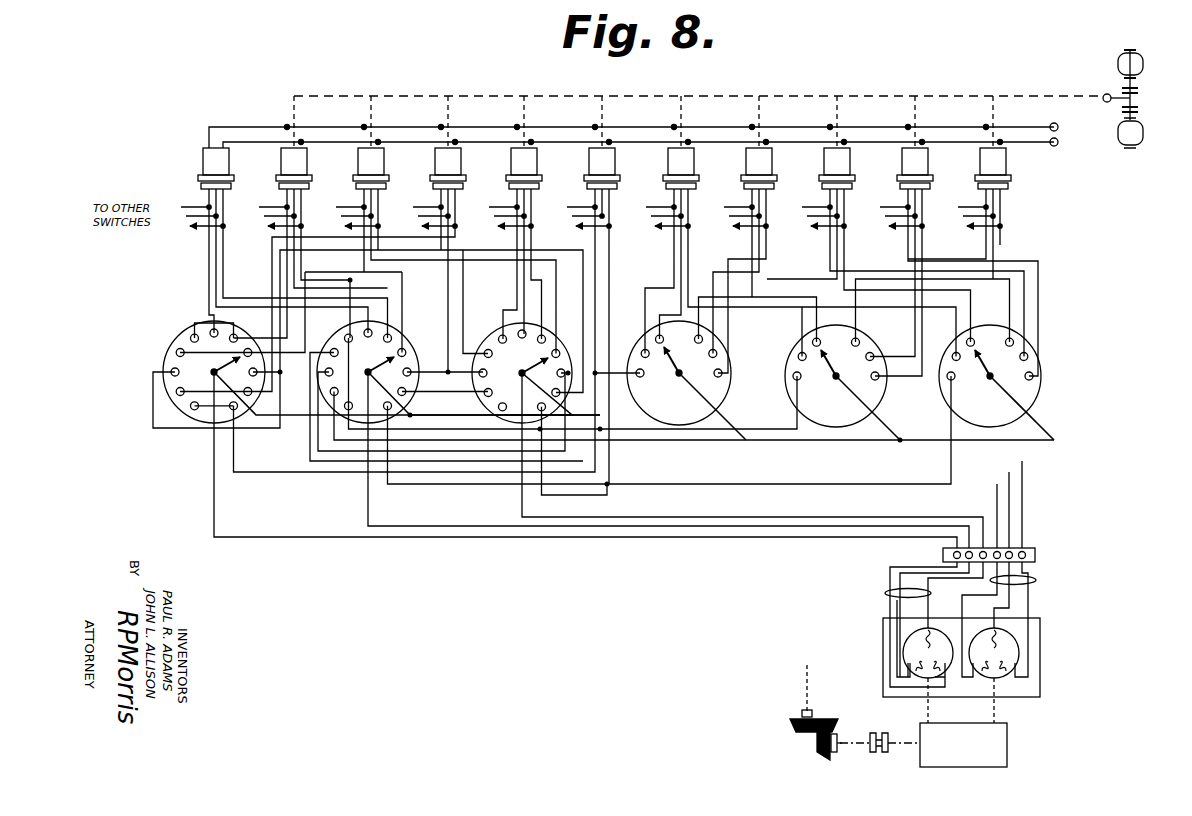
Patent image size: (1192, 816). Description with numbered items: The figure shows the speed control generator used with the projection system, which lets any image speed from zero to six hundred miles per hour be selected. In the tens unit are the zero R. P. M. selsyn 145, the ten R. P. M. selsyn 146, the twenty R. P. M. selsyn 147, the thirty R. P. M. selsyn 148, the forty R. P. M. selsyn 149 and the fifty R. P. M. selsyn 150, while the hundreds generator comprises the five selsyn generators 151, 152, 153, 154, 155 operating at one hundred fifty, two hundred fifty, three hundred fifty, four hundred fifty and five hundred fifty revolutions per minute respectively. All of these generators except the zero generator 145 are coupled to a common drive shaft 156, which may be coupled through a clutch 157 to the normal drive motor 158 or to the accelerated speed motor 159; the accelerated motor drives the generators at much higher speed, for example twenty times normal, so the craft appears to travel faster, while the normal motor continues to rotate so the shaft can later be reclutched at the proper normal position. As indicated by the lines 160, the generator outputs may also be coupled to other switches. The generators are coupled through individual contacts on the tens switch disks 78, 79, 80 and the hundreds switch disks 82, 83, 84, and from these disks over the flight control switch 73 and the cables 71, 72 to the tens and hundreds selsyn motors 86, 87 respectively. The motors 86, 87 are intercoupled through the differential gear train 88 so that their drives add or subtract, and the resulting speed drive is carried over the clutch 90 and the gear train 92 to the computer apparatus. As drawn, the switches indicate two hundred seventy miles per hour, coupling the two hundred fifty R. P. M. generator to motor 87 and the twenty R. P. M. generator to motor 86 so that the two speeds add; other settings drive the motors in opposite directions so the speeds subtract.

The cable 71 is at (885, 593).
The cable 72 is at (1036, 580).
The cam controlled switch 73 is at (943, 555).
The tens switch disk 78 is at (381, 372).
The tens switch disk 79 is at (458, 372).
The tens switch disk 80 is at (522, 373).
The hundreds switch disk 82 is at (686, 380).
The hundreds switch disk 83 is at (842, 382).
The hundreds switch disk 84 is at (996, 382).
The tens selsyn motor 86 is at (936, 640).
The hundreds selsyn motor 87 is at (1004, 640).
The differential gear train 88 is at (1007, 735).
The clutch 90 is at (879, 732).
The bevel gear 92 is at (806, 737).
The zero R. P. M. selsyn 145 is at (232, 188).
The 10 R. P. M. selsyn 146 is at (310, 188).
The 20 R. P. M. selsyn 147 is at (387, 188).
The 30 R. P. M. selsyn 148 is at (464, 188).
The 40 R. P. M. selsyn 149 is at (540, 188).
The 50 R. P. M. selsyn 150 is at (618, 188).
The selsyn generator 151 is at (697, 188).
The selsyn generator 152 is at (775, 188).
The selsyn generator 153 is at (853, 188).
The selsyn generator 154 is at (931, 188).
The selsyn generator 155 is at (1009, 188).
The common drive shaft 156 is at (745, 93).
The clutch 157 is at (1106, 94).
The normal drive motor 158 is at (1143, 136).
The accelerated speed motor 159 is at (1143, 65).
The lines 160 is at (207, 228).